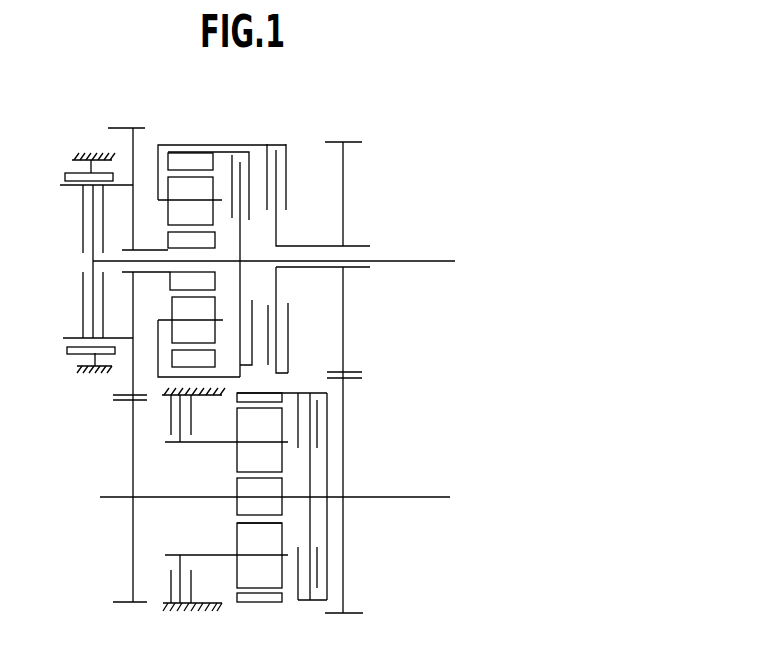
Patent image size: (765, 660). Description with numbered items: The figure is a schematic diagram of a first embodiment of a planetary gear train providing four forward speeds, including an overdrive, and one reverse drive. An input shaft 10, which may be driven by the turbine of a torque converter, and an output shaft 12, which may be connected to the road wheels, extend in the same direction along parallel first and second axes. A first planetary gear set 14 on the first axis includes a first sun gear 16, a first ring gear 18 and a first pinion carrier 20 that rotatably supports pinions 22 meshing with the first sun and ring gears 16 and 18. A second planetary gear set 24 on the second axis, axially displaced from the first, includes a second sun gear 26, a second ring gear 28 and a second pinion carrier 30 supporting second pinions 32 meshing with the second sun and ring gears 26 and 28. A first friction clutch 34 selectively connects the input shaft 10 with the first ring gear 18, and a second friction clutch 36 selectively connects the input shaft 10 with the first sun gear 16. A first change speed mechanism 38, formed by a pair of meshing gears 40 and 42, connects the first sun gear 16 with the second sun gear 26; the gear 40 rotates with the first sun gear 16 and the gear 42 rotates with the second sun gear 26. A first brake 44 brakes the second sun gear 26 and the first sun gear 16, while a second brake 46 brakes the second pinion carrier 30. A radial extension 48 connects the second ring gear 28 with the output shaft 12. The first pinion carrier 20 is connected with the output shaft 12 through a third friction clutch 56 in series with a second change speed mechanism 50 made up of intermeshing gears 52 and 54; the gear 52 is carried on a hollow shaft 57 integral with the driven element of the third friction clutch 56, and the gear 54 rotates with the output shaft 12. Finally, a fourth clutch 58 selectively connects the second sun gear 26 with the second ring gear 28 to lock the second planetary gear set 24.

The input shaft 10 is at (402, 260).
The output shaft 12 is at (391, 499).
The first planetary gear set 14 is at (158, 240).
The first sun gear 16 is at (173, 281).
The first ring gear 18 is at (193, 158).
The first pinion carrier 20 is at (158, 182).
The pinions 22 is at (177, 300).
The second planetary gear set 24 is at (296, 486).
The second sun gear 26 is at (240, 488).
The second ring gear 28 is at (237, 398).
The second pinion carrier 30 is at (242, 537).
The second pinions 32 is at (238, 525).
The first friction clutch 34 is at (258, 163).
The second friction clutch 36 is at (80, 207).
The first change speed mechanism 38 is at (84, 408).
The gear 40 is at (130, 372).
The gear 42 is at (130, 422).
The first brake 44 is at (72, 355).
The second brake 46 is at (172, 590).
The radial extension 48 is at (328, 575).
The second change speed mechanism 50 is at (392, 387).
The gear 52 is at (345, 352).
The gear 54 is at (345, 417).
The third friction clutch 56 is at (287, 165).
The hollow shaft 57 is at (316, 246).
The fourth clutch 58 is at (298, 583).